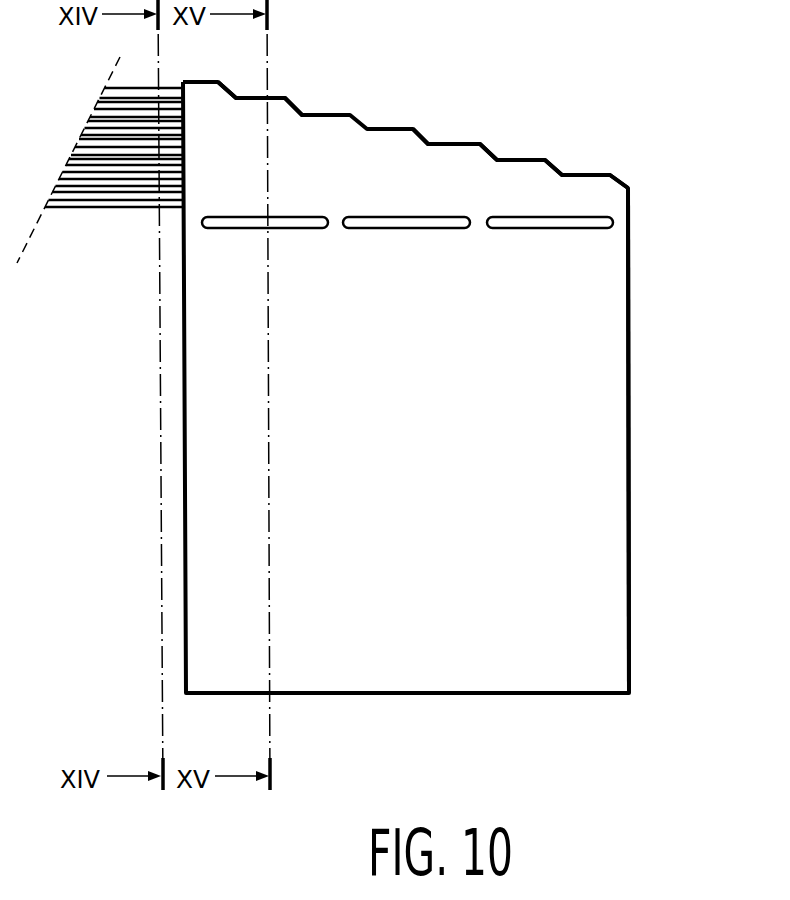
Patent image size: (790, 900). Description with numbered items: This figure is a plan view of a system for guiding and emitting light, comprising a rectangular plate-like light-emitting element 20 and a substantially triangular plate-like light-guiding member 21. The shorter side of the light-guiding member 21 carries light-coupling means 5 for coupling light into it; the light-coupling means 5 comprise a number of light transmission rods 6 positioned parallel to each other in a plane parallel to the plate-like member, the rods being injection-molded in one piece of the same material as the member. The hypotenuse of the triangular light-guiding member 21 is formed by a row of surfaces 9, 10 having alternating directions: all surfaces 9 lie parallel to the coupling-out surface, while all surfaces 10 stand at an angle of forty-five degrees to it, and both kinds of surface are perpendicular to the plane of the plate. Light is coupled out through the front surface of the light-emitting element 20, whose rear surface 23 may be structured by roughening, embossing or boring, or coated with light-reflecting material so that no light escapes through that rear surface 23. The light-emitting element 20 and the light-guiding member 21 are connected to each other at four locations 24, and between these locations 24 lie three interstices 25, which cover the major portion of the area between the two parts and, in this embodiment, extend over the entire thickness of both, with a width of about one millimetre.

The light-coupling means 5 is at (82, 218).
The light transmission rods 6 is at (104, 90).
The surfaces parallel to the coupling-out surface 9 is at (325, 110).
The surfaces at 45° to the coupling-out surface 10 is at (553, 158).
The light-emitting element 20 is at (666, 414).
The light-guiding member 21 is at (453, 180).
The rear surface 23 is at (608, 611).
The locations 24 is at (193, 224).
The interstices 25 is at (248, 225).